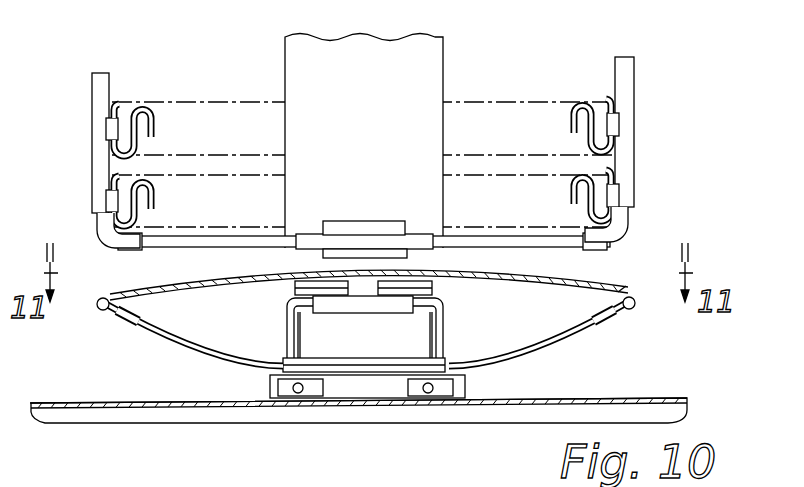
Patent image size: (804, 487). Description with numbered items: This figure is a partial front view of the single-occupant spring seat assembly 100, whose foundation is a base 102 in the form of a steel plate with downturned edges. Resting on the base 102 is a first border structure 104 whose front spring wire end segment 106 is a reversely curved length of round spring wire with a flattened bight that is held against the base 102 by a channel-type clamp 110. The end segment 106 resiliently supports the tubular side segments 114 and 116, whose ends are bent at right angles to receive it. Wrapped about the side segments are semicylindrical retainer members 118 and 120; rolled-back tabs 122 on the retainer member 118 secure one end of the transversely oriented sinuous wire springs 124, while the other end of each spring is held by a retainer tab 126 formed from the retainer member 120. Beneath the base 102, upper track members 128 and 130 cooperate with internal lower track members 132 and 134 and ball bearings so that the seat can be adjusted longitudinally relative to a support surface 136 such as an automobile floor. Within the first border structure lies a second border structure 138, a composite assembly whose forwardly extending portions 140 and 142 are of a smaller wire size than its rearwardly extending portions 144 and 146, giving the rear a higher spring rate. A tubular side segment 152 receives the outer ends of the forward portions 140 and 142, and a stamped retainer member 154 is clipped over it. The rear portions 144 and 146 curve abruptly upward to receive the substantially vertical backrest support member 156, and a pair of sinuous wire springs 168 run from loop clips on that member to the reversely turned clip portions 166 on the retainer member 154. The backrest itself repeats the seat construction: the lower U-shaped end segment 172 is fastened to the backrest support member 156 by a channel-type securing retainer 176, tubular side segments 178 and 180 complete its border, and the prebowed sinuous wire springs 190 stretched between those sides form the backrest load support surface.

The single-occupant spring seat assembly 100 is at (650, 168).
The base 102 is at (467, 383).
The first border structure 104 is at (173, 354).
The front spring wire end segment 106 is at (565, 334).
The channel-type clamp 110 is at (370, 372).
The tubular side segment 114 is at (607, 320).
The tubular side segment 116 is at (118, 322).
The retainer member 118 is at (632, 306).
The retainer member 120 is at (98, 308).
The tabs 122 is at (618, 290).
The sinuous wire springs 124 is at (528, 247).
The retainer tab 126 is at (120, 266).
The upper track member 128 is at (328, 397).
The upper track member 130 is at (403, 393).
The lower track member 132 is at (290, 397).
The lower track member 134 is at (433, 397).
The support surface 136 is at (687, 397).
The second border structure 138 is at (285, 322).
The forwardly extending end segment portion 140 is at (443, 337).
The forwardly extending end segment portion 142 is at (285, 336).
The rearwardly extending end segment portion 144 is at (428, 336).
The rearwardly extending end segment portion 146 is at (300, 340).
The side segment 152 is at (440, 302).
The retainer member 154 is at (364, 297).
The backrest support member 156 is at (436, 60).
The reversely turned clip portions 166 is at (432, 285).
The sinuous wire springs 168 is at (422, 285).
The lower U-shaped end segment 172 is at (193, 245).
The channel-type securing retainer 176 is at (342, 227).
The side segment 178 is at (625, 222).
The side segment 180 is at (100, 222).
The sinuous wire springs 190 is at (158, 192).